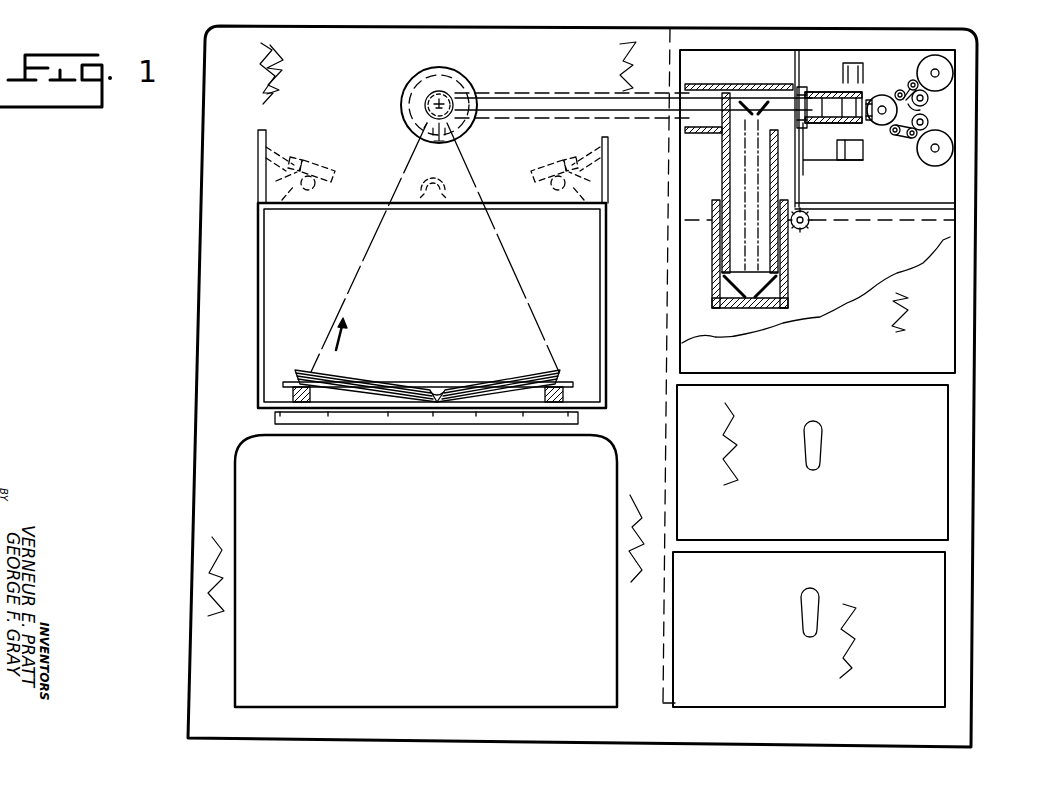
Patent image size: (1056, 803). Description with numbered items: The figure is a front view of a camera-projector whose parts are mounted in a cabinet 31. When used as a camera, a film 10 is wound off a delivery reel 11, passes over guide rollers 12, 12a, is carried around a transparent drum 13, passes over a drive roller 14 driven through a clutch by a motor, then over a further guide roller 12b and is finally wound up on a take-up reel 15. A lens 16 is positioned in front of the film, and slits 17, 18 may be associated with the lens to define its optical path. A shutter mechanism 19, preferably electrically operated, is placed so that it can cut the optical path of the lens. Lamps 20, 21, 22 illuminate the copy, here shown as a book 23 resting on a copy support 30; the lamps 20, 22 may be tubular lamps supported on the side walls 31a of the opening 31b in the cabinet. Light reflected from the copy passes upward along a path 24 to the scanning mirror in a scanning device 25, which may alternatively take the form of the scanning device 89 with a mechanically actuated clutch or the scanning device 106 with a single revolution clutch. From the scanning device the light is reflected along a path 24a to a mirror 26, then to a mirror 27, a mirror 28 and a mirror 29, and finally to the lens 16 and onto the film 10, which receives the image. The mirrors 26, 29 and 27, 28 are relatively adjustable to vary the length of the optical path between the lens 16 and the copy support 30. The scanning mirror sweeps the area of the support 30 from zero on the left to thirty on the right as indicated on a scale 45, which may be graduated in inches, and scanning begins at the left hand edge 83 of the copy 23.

The film 10 is at (927, 107).
The delivery reel 11 is at (948, 70).
The guide roller 12 is at (910, 82).
The guide roller 12a is at (930, 98).
The guide roller 12b is at (912, 138).
The transparent drum 13 is at (880, 96).
The drive roller 14 is at (928, 120).
The take-up reel 15 is at (950, 148).
The lens 16 is at (855, 100).
The slit 17 is at (878, 116).
The slit 18 is at (805, 102).
The shutter mechanism 19 is at (865, 145).
The lamp 20 is at (330, 182).
The lamp 21 is at (426, 190).
The lamp 22 is at (528, 189).
The book 23 is at (419, 361).
The path 24 is at (435, 247).
The path 24a is at (545, 100).
The scanning device 25 is at (430, 68).
The scanning device 89 is at (439, 105).
The scanning device 106 is at (439, 105).
The mirror 26 is at (746, 101).
The mirror 27 is at (711, 308).
The mirror 28 is at (785, 290).
The mirror 29 is at (766, 101).
The copy support 30 is at (279, 400).
The cabinet 31 is at (207, 328).
The side walls 31a is at (262, 265).
The opening 31b is at (567, 297).
The scale 45 is at (275, 420).
The left hand edge 83 is at (297, 370).